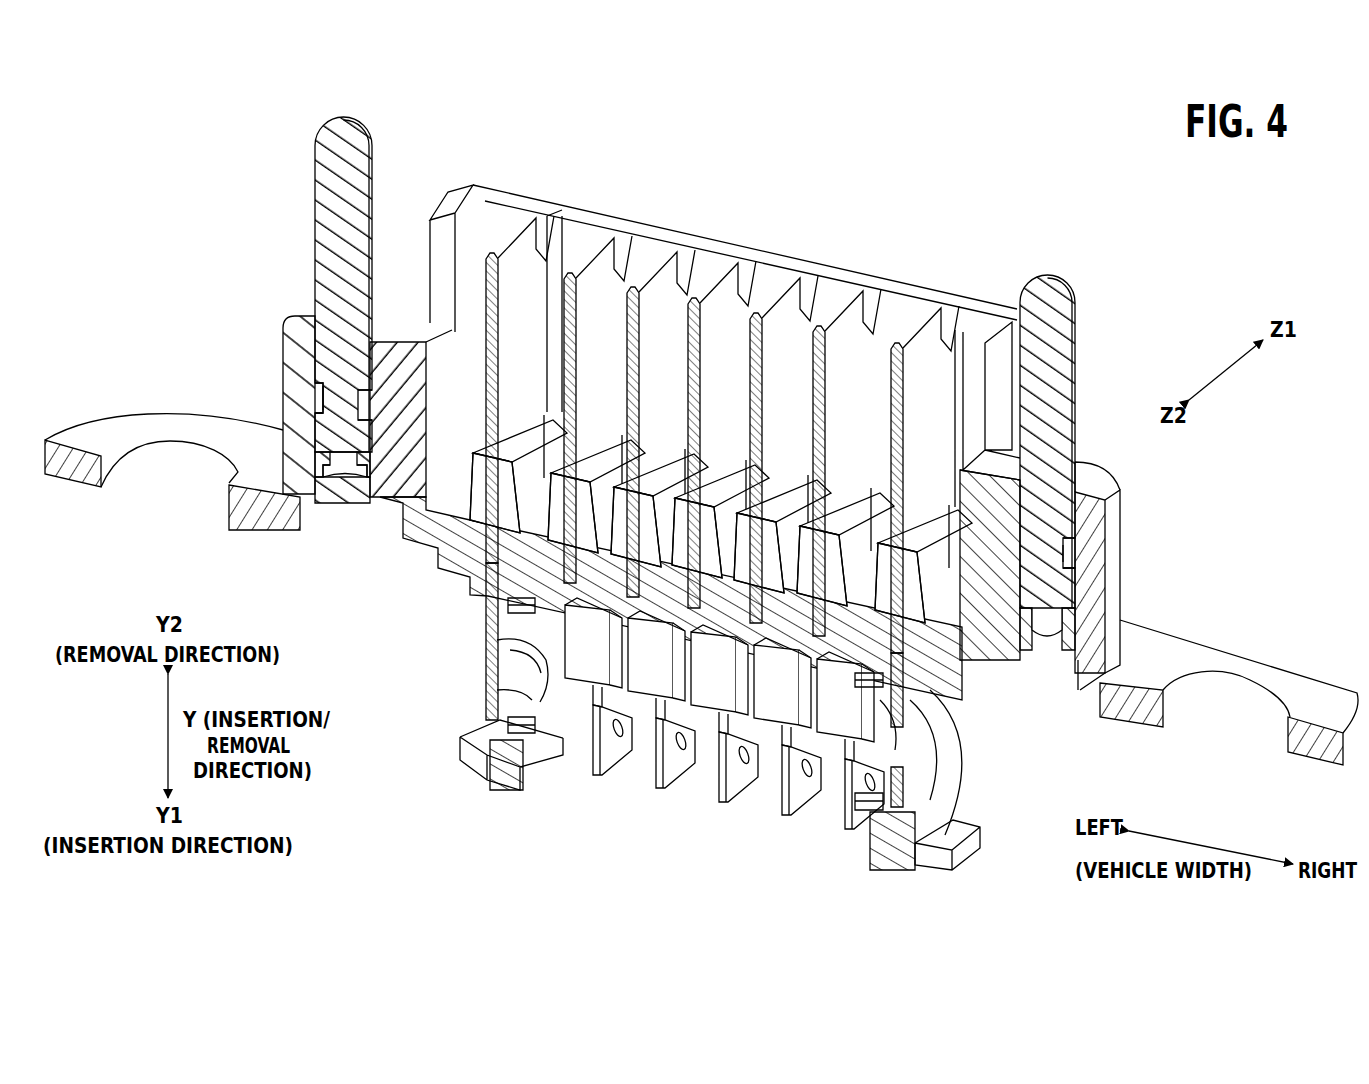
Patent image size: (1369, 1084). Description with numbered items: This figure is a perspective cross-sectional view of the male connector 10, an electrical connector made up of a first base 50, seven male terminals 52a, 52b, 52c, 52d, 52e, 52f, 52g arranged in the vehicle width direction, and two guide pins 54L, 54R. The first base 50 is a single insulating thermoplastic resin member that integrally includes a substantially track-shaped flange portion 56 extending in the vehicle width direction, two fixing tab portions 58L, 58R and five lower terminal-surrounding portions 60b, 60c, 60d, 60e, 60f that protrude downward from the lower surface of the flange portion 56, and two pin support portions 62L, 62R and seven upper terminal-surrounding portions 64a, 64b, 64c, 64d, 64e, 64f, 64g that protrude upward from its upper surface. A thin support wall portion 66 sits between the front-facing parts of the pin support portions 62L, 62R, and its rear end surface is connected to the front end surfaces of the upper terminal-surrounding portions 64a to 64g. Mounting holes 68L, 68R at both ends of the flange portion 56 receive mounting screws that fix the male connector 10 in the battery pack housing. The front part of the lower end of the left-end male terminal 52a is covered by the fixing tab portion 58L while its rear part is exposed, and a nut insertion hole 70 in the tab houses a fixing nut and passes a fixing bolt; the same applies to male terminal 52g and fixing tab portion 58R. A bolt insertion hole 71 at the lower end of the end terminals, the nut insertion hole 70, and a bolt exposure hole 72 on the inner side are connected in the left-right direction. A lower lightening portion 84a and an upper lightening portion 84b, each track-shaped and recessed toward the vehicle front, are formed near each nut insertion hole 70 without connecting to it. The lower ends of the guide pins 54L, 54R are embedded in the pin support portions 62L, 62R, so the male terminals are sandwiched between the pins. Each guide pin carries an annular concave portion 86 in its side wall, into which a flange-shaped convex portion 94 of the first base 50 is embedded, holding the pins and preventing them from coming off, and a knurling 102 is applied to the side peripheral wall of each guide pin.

The male connector 10 is at (1262, 191).
The first base 50 is at (1233, 637).
The male terminal 52a is at (519, 254).
The male terminal 52b is at (595, 269).
The male terminal 52c is at (657, 283).
The male terminal 52d is at (718, 299).
The male terminal 52e is at (781, 312).
The male terminal 52f is at (843, 326).
The male terminal 52g is at (921, 343).
The guide pin 54L is at (324, 180).
The guide pin 54R is at (1057, 331).
The flange portion 56 is at (255, 520).
The fixing tab portion 58L is at (465, 750).
The fixing tab portion 58R is at (970, 847).
The lower terminal-surrounding portion 60b is at (588, 670).
The lower terminal-surrounding portion 60c is at (648, 683).
The lower terminal-surrounding portion 60d is at (712, 697).
The lower terminal-surrounding portion 60e is at (773, 710).
The lower terminal-surrounding portion 60f is at (832, 727).
The pin support portion 62L is at (300, 316).
The pin support portion 62R is at (1100, 476).
The upper terminal-surrounding portion 64a is at (528, 462).
The upper terminal-surrounding portion 64b is at (608, 482).
The upper terminal-surrounding portion 64c is at (668, 500).
The upper terminal-surrounding portion 64d is at (730, 512).
The upper terminal-surrounding portion 64e is at (793, 526).
The upper terminal-surrounding portion 64f is at (855, 540).
The upper terminal-surrounding portion 64g is at (935, 556).
The support wall portion 66 is at (982, 323).
The mounting hole 68L is at (173, 462).
The mounting hole 68R is at (1267, 693).
The nut insertion hole 70 is at (523, 657).
The bolt insertion hole 71 is at (497, 660).
The bolt exposure hole 72 is at (547, 683).
The lower lightening portion 84a is at (520, 733).
The upper lightening portion 84b is at (513, 603).
The annular concave portion 86 is at (322, 396).
The flange-shaped convex portion 94 is at (320, 383).
The knurling 102 is at (318, 412).